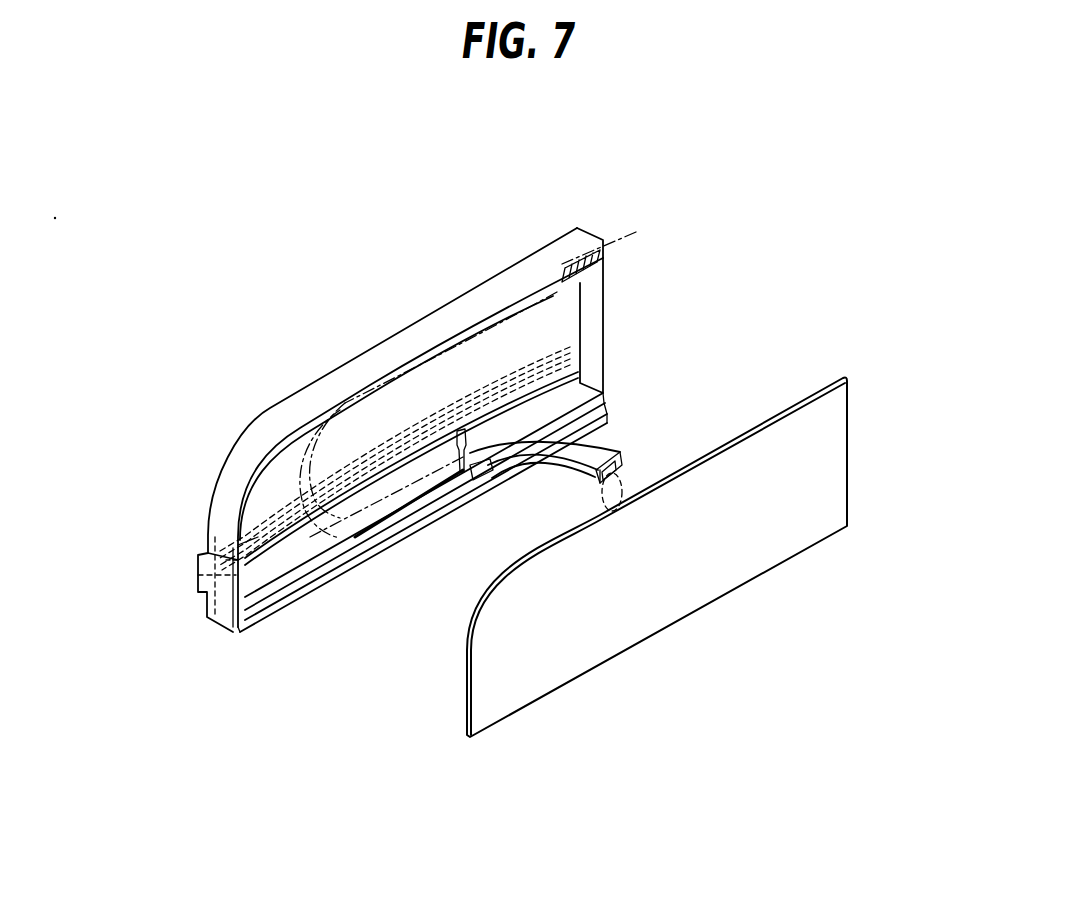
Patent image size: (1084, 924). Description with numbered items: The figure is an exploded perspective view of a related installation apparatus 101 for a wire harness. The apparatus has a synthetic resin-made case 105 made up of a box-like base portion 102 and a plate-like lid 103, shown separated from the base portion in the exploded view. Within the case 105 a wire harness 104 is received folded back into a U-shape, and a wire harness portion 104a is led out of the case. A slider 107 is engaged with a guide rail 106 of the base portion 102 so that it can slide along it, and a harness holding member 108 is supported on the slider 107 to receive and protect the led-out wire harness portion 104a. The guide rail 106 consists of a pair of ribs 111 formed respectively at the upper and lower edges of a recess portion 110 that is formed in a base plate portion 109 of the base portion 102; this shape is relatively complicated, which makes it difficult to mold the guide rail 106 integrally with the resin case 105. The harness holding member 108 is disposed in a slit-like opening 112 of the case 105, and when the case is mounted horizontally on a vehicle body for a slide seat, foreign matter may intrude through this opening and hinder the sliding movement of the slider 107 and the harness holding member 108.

The installation apparatus 101 is at (698, 195).
The base portion 102 is at (618, 222).
The lid 103 is at (822, 364).
The wire harness 104 is at (387, 388).
The wire harness portion 104a is at (603, 490).
The case 105 is at (782, 269).
The guide rail 106 is at (518, 393).
The slider 107 is at (459, 472).
The harness holding member 108 is at (607, 433).
The base plate portion 109 is at (563, 322).
The recess portion 110 is at (197, 577).
The ribs 111 is at (258, 537).
The slit-like opening 112 is at (588, 414).